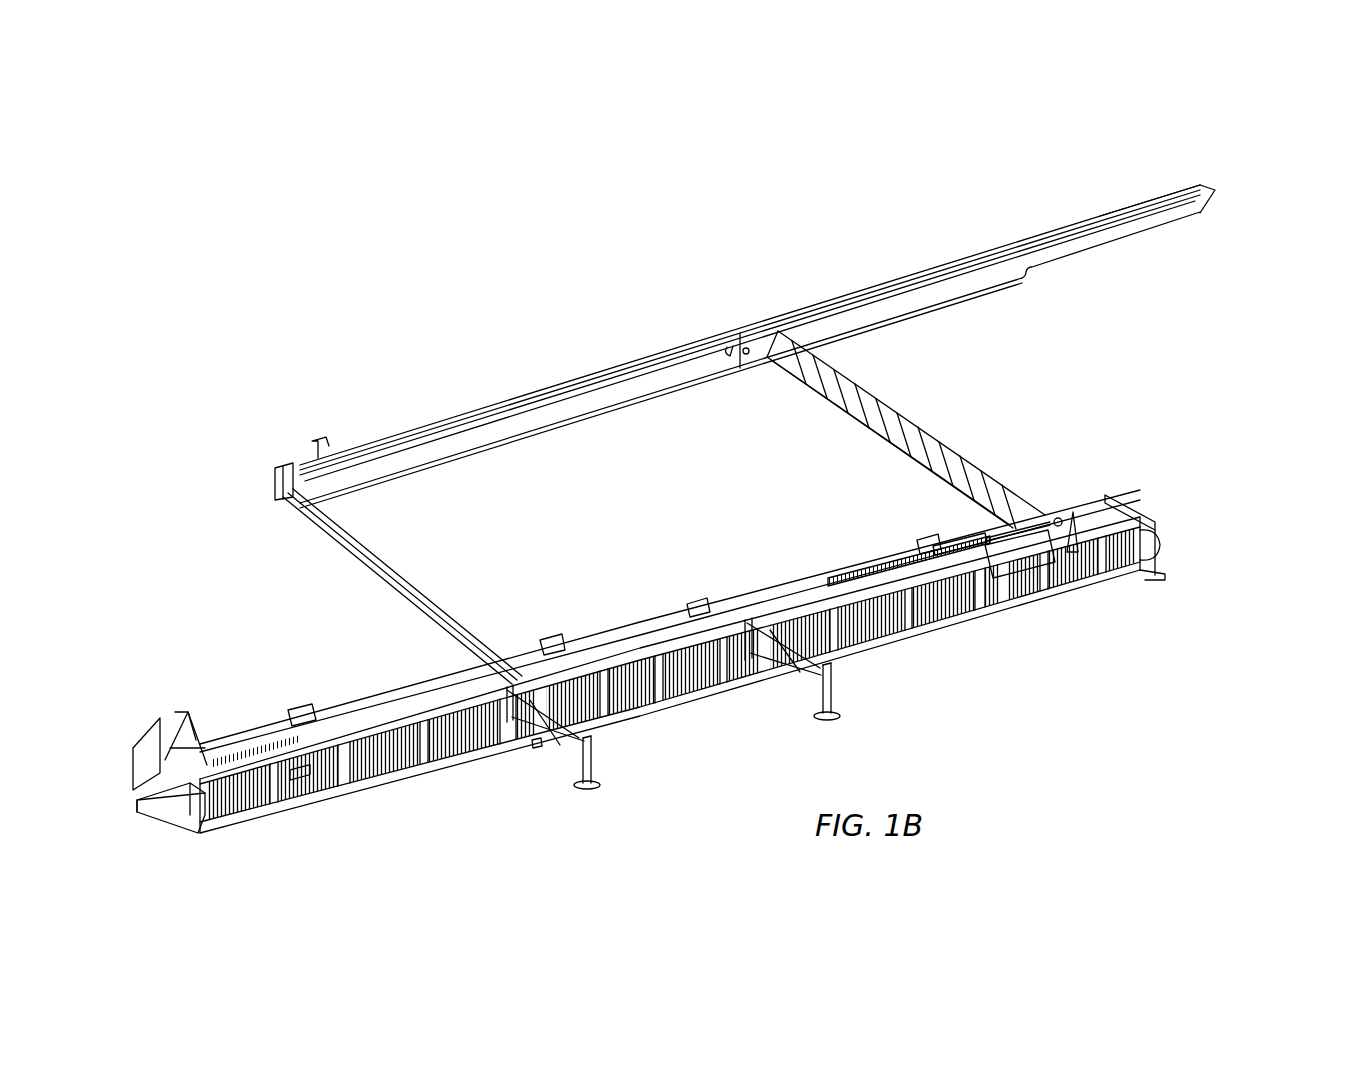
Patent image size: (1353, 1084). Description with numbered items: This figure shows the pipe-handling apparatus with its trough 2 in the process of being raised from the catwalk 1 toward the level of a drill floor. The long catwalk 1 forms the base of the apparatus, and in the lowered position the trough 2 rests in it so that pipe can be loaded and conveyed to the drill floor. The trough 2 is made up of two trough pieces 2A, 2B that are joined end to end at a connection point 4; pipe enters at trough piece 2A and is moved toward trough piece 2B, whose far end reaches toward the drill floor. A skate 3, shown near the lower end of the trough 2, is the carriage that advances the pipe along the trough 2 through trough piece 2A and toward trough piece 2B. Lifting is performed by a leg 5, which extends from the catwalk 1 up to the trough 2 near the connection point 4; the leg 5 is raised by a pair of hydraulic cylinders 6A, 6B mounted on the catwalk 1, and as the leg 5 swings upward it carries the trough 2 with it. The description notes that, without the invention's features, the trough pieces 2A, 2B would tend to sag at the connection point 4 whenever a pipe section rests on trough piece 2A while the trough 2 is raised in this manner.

The catwalk 1 is at (893, 655).
The trough 2 is at (1213, 190).
The trough piece 2A is at (275, 475).
The trough piece 2B is at (1200, 183).
The skate 3 is at (312, 444).
The connection point 4 is at (722, 338).
The leg 5 is at (927, 423).
The hydraulic cylinder 6A is at (965, 537).
The hydraulic cylinder 6B is at (1020, 572).